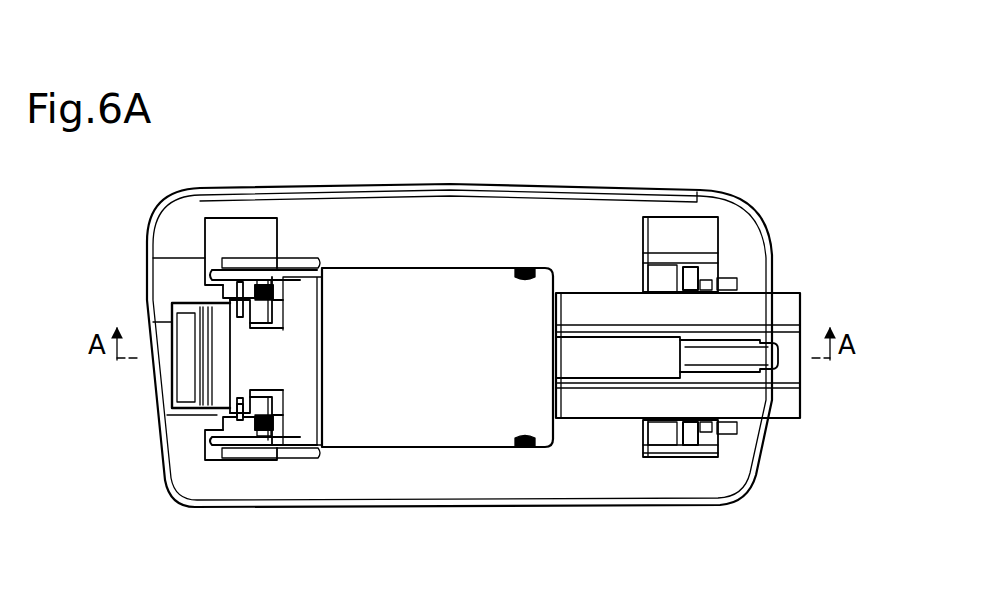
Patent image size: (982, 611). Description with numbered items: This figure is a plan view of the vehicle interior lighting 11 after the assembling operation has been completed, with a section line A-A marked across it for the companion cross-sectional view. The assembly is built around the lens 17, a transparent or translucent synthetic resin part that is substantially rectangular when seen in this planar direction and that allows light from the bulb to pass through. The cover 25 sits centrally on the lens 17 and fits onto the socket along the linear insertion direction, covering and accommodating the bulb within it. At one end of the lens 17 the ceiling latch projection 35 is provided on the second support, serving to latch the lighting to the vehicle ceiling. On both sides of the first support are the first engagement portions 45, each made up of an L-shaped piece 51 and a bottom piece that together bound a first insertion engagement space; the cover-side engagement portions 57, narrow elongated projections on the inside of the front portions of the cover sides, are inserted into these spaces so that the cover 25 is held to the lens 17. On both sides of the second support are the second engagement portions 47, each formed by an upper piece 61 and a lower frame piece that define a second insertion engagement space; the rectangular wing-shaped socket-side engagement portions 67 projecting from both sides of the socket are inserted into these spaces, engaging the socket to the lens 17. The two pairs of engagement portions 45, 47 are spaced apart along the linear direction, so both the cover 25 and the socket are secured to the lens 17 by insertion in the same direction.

The vehicle interior lighting 11 is at (369, 160).
The lens 17 is at (620, 183).
The cover 25 is at (420, 262).
The ceiling latch projection 35 is at (171, 391).
The first engagement portion 45 is at (206, 289).
The second engagement portion 47 is at (632, 270).
The L-shaped piece 51 is at (244, 300).
The cover-side engagement portion 57 is at (263, 300).
The upper piece 61 is at (665, 285).
The socket-side engagement portion 67 is at (710, 285).